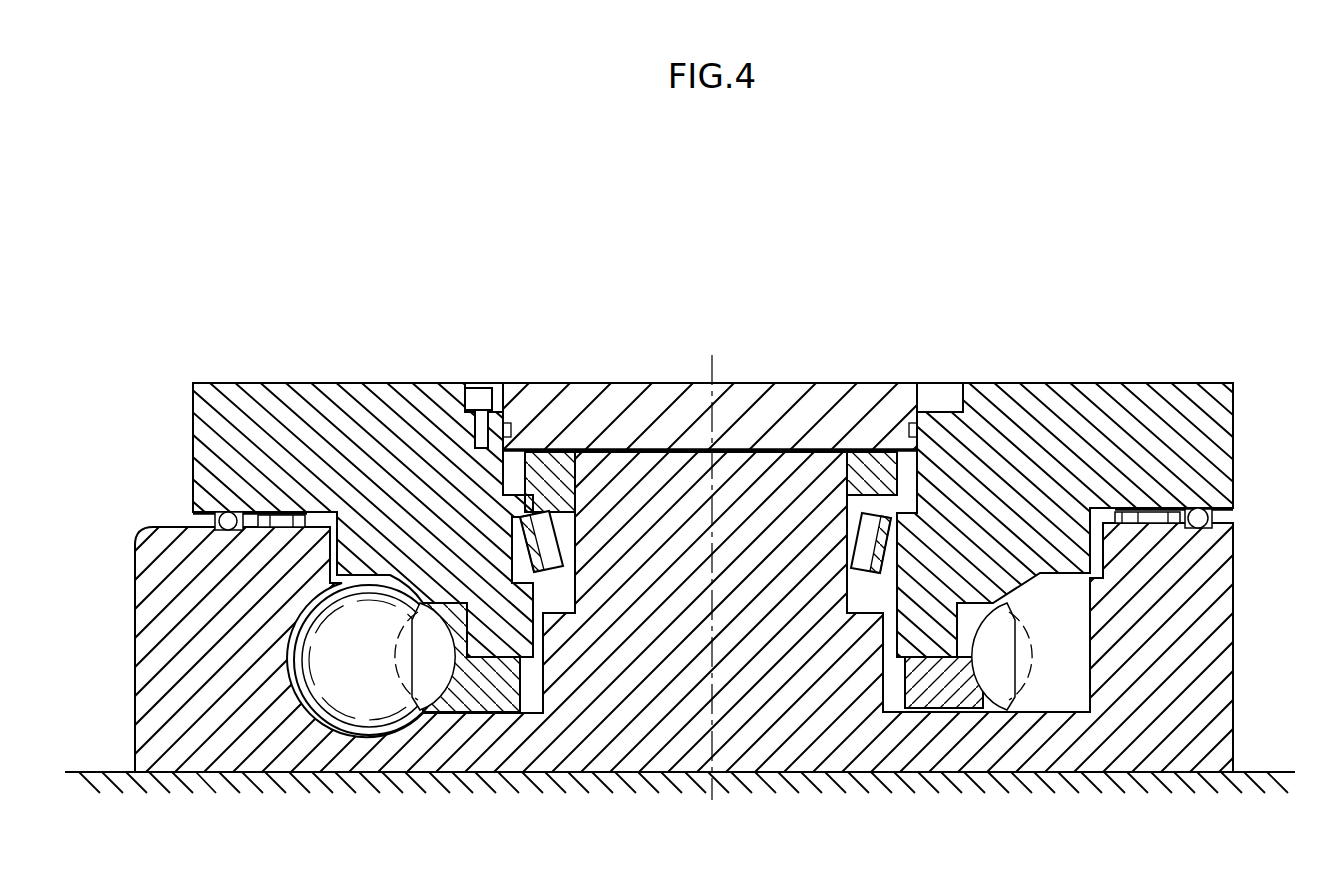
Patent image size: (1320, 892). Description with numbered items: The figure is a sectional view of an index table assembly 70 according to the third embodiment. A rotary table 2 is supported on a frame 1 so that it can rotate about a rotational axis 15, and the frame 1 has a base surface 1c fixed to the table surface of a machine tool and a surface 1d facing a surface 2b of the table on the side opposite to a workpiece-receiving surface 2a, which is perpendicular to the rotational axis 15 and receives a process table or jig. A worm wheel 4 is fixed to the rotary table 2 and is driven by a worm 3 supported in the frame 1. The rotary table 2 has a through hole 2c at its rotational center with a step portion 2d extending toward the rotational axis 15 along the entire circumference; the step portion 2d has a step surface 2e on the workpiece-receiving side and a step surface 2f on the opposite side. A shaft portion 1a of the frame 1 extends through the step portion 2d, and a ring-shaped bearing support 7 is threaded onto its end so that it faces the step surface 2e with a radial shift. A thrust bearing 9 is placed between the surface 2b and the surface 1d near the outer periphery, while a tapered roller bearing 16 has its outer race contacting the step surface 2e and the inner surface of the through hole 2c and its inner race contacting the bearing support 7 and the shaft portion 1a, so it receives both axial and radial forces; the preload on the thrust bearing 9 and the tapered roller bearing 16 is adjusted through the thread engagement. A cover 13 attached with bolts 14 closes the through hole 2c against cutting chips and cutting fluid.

The frame 1 is at (177, 557).
The shaft portion 1a is at (825, 565).
The base surface 1c is at (303, 785).
The surface 1d is at (313, 505).
The rotary table 2 is at (275, 415).
The workpiece-receiving surface 2a is at (1075, 412).
The surface 2b is at (1136, 450).
The through hole 2c is at (507, 478).
The step portion 2d is at (513, 623).
The step surface 2e is at (912, 562).
The step surface 2f is at (887, 655).
The worm 3 is at (332, 649).
The worm wheel 4 is at (472, 683).
The bearing support 7 is at (877, 477).
The thrust bearing 9 is at (1136, 450).
The cover 13 is at (765, 405).
The bolts 14 is at (478, 390).
The rotational axis 15 is at (716, 683).
The tapered roller bearing 16 is at (540, 537).
The index table assembly 70 is at (748, 216).